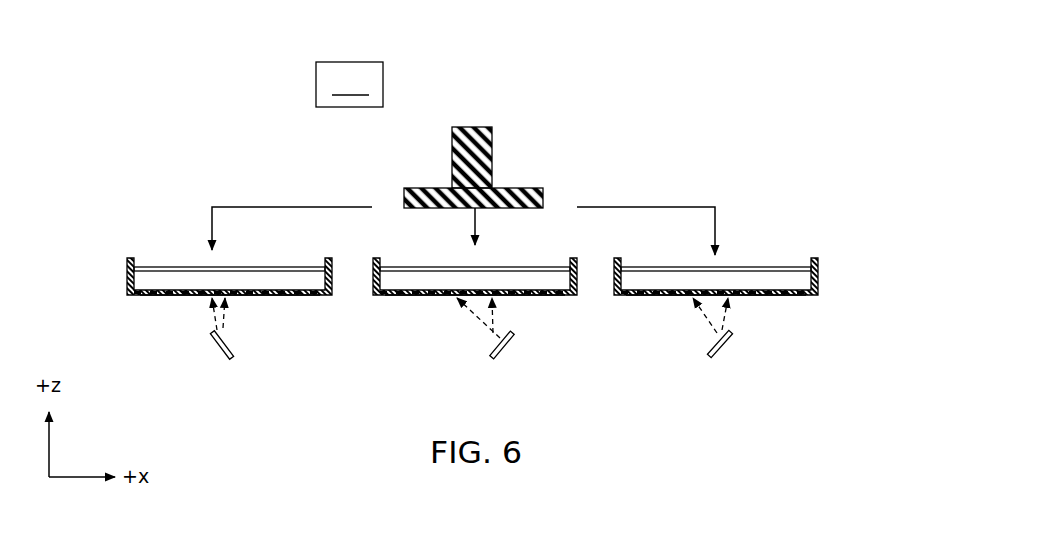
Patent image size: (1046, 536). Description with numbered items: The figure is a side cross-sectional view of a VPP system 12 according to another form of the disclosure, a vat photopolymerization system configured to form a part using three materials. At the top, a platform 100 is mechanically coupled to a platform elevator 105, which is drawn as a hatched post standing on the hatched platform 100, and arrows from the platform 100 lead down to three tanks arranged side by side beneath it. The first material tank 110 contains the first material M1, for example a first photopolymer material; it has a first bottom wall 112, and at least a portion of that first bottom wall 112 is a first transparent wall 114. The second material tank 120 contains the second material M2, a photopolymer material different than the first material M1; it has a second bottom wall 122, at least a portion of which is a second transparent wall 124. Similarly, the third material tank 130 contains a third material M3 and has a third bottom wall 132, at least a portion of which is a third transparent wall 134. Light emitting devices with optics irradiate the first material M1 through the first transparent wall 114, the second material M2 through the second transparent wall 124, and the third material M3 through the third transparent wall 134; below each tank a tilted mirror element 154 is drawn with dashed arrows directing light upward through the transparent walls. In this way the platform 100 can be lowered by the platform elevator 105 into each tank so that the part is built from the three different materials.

The VPP system 12 is at (746, 63).
The platform 100 is at (536, 182).
The platform elevator 105 is at (496, 137).
The first material tank 110 is at (122, 275).
The first bottom wall 112 is at (148, 293).
The first transparent wall 114 is at (197, 297).
The second material tank 120 is at (369, 284).
The second bottom wall 122 is at (532, 297).
The second transparent wall 124 is at (442, 297).
The third material tank 130 is at (824, 283).
The third bottom wall 132 is at (788, 297).
The third transparent wall 134 is at (682, 297).
The sensor / mirror 154 is at (218, 342).
The first material M1 is at (175, 270).
The second material M2 is at (520, 268).
The third material M3 is at (783, 268).